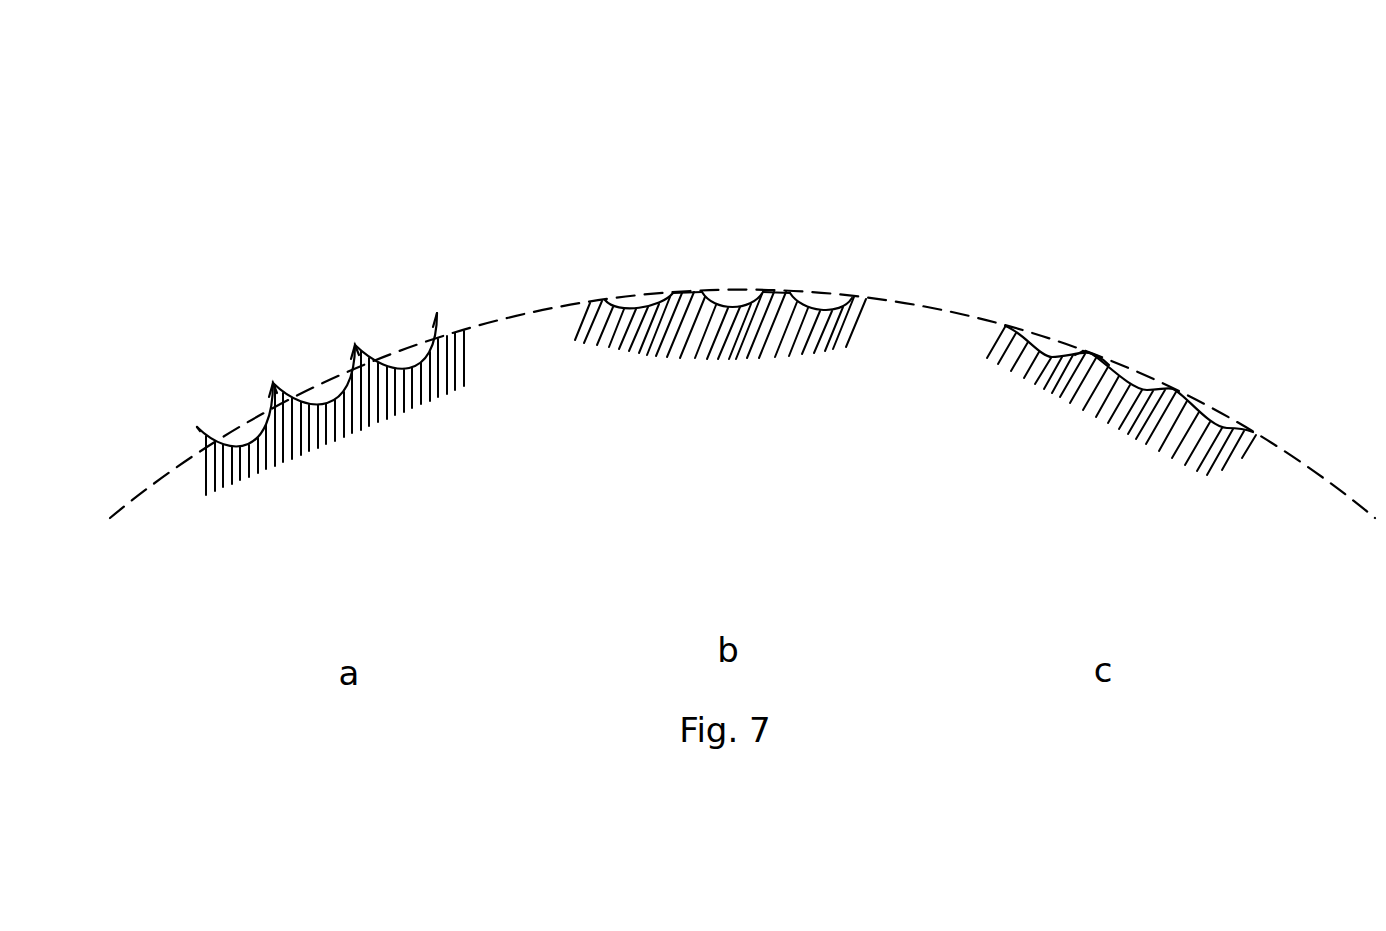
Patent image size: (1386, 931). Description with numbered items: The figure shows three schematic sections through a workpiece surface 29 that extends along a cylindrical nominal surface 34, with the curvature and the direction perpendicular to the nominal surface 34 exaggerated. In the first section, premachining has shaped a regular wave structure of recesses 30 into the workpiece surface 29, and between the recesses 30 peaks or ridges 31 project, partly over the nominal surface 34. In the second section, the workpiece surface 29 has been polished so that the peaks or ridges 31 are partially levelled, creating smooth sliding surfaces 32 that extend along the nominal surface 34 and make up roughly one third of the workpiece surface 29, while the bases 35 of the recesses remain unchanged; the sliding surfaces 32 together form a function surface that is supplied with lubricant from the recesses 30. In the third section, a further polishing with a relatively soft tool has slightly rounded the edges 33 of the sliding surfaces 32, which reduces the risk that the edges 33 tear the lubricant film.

The workpiece surface 29 is at (265, 478).
The recesses 30 is at (247, 427).
The peaks or ridges 31 is at (187, 413).
The sliding surfaces 32 is at (607, 295).
The edges 33 is at (1085, 343).
The nominal surface 34 is at (925, 298).
The bases 35 is at (821, 298).